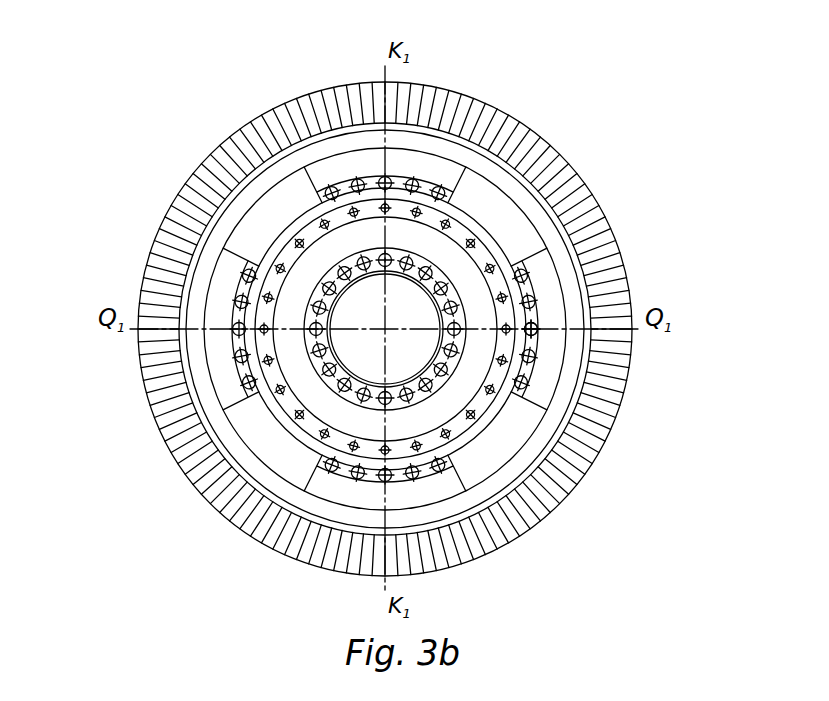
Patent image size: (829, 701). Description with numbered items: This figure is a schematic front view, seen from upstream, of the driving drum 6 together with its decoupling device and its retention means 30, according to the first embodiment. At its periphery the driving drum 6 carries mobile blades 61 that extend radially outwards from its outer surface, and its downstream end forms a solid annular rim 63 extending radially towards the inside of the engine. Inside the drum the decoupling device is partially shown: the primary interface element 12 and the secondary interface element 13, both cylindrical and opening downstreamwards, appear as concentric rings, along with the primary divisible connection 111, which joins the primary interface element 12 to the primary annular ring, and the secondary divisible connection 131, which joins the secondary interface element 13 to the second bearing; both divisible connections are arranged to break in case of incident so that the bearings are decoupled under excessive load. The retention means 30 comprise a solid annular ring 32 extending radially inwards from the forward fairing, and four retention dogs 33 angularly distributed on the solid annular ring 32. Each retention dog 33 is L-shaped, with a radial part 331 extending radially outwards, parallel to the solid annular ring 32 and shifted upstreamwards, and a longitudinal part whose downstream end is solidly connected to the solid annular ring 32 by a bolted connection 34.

The driving drum 6 is at (672, 145).
The mobile blades 61 is at (567, 167).
The downstream end forming a solid annular rim 63 is at (533, 215).
The retention means 30 is at (707, 275).
The retention dogs 33 is at (328, 173).
The radial part 331 is at (548, 293).
The connection 34 is at (538, 330).
The solid annular ring 32 is at (510, 408).
The primary divisible connection 111 is at (263, 328).
The primary interface element 12 is at (295, 358).
The secondary divisible connection 131 is at (322, 378).
The secondary interface element 13 is at (412, 278).